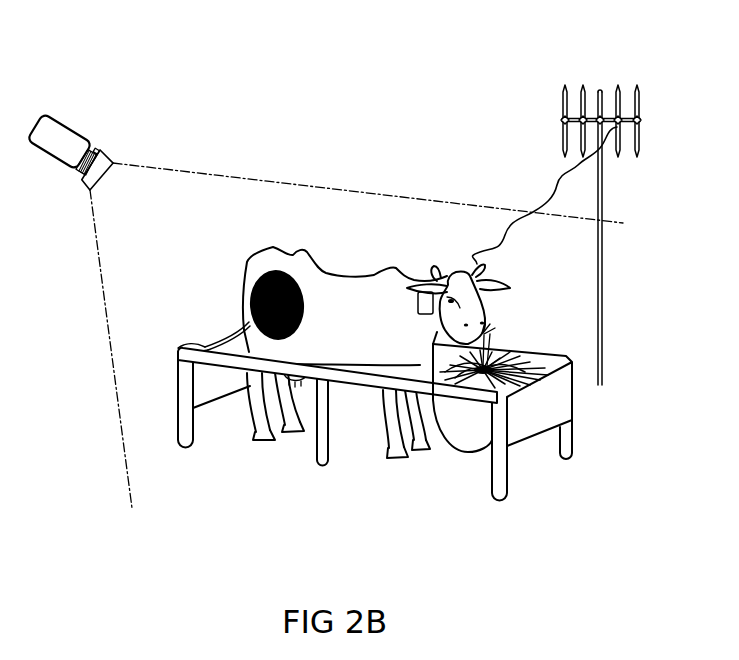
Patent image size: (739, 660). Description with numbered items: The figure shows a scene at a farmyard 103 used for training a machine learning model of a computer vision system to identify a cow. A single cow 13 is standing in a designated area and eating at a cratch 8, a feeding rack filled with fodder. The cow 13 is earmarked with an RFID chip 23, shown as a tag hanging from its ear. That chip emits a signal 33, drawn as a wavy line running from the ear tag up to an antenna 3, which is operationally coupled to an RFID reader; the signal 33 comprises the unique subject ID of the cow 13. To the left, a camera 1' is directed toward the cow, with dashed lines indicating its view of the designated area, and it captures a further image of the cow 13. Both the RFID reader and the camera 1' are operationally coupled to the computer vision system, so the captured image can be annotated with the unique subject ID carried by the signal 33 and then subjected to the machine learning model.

The camera 1' is at (70, 135).
The farmyard 103 is at (356, 283).
The antenna 3 is at (602, 92).
The signal 33 is at (544, 195).
The cow 13 is at (252, 268).
The RFID chip 23 is at (420, 284).
The cratch 8 is at (527, 447).